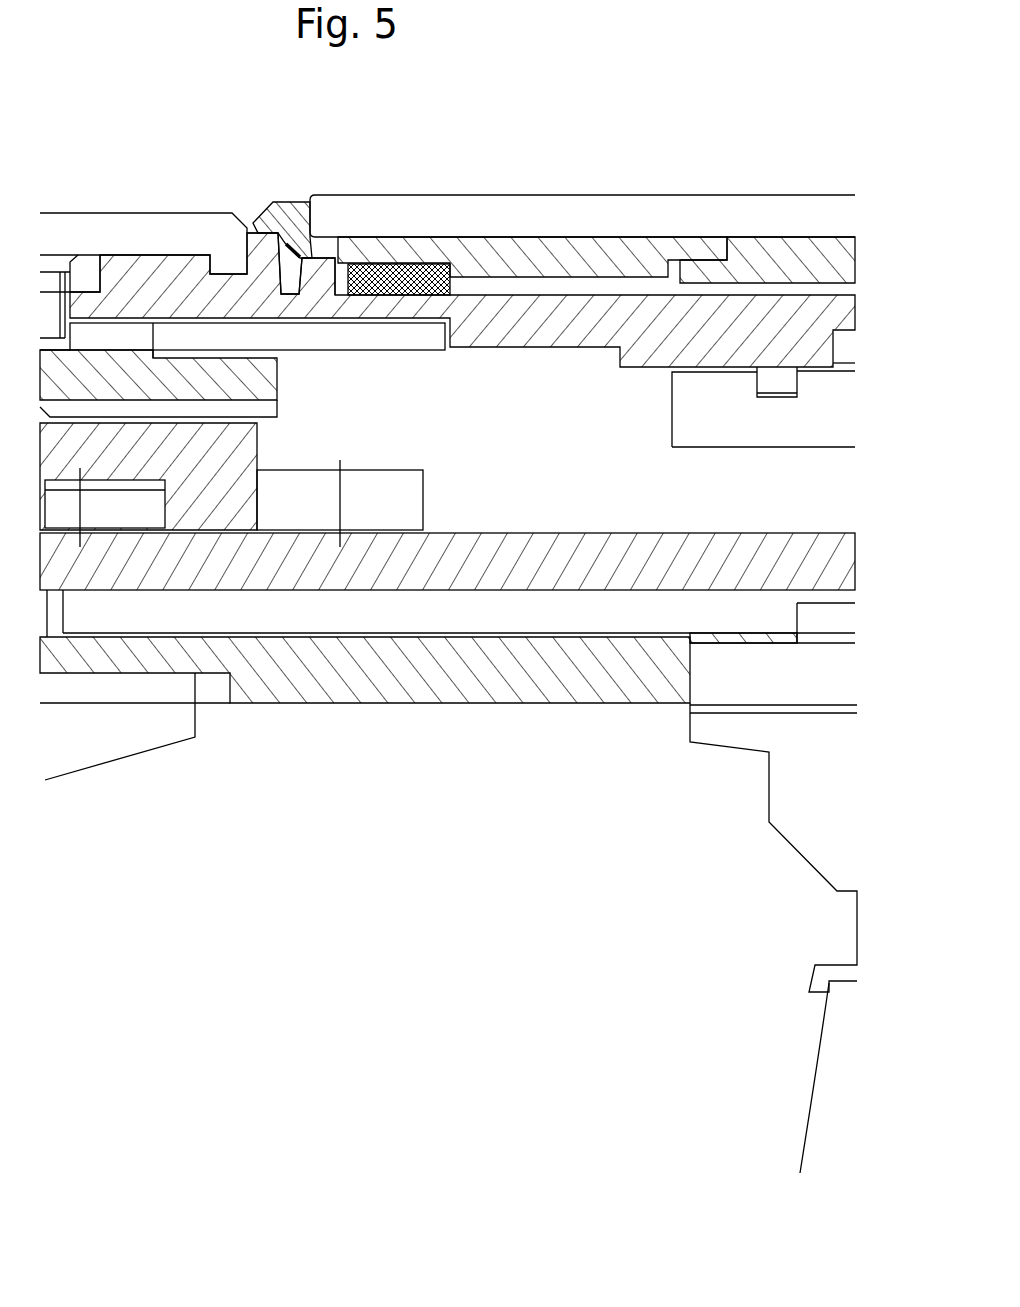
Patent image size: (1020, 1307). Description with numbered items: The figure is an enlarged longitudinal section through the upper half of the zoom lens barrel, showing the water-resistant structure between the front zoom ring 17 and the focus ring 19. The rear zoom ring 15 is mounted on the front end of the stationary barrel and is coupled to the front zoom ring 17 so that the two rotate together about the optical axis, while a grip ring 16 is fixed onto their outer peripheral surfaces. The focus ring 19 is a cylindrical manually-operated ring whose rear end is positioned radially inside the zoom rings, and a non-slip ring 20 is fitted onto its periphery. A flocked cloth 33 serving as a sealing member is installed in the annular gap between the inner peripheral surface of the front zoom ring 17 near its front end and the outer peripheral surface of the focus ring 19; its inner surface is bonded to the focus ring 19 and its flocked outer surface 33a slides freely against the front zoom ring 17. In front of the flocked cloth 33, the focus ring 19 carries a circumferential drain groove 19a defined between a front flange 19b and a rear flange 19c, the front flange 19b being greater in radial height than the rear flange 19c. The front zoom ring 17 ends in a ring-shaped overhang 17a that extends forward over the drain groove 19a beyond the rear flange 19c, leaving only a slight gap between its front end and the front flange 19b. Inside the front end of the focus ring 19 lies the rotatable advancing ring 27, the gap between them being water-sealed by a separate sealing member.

The rear zoom ring 15 is at (802, 250).
The grip ring 16 is at (653, 205).
The front zoom ring 17 is at (550, 253).
The overhang 17a is at (264, 220).
The focus ring 19 is at (172, 273).
The drain groove 19a is at (300, 276).
The front flange 19b is at (258, 250).
The rear flange 19c is at (328, 262).
The non-slip ring 20 is at (85, 230).
The rotatable advancing ring 27 is at (270, 375).
The flocked cloth 33 is at (430, 268).
The seal lip of elastic element 33a is at (292, 268).